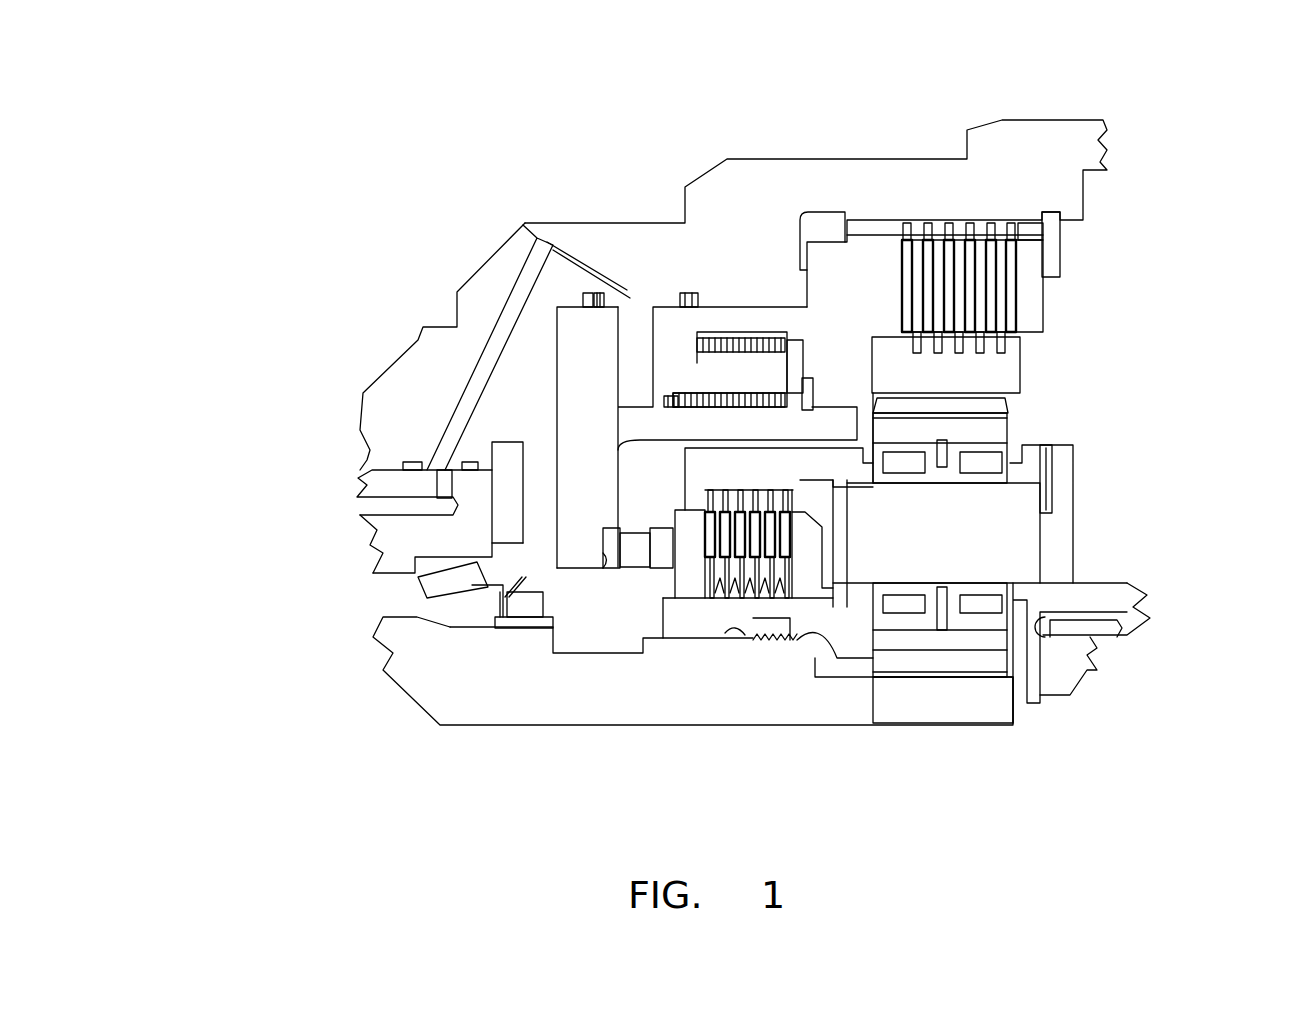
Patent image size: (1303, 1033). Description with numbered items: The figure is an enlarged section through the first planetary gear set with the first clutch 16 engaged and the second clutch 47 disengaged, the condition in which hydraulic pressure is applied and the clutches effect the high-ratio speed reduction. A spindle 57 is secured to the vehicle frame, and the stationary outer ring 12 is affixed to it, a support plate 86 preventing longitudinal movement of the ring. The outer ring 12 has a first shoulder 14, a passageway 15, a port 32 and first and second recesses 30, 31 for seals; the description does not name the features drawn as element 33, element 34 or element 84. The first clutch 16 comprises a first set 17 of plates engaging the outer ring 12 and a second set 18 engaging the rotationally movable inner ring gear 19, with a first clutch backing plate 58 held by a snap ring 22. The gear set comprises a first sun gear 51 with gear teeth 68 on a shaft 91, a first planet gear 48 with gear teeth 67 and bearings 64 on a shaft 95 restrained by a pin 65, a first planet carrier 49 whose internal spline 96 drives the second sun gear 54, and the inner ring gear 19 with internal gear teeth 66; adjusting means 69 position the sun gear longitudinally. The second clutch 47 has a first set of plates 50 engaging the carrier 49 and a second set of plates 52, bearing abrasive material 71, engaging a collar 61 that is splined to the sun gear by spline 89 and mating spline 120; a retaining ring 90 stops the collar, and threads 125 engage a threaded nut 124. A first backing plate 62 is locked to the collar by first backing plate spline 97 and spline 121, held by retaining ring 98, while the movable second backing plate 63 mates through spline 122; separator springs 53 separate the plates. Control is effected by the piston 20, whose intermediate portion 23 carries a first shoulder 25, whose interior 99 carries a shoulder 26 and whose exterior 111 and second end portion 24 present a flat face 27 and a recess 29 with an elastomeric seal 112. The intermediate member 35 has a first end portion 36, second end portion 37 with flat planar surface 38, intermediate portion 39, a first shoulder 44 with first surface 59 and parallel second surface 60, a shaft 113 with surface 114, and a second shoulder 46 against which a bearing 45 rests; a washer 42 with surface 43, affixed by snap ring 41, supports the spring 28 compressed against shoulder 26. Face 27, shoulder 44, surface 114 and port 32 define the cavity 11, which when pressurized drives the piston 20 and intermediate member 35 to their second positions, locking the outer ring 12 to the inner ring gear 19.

The cavity 11 is at (632, 258).
The outer ring 12 is at (775, 187).
The first shoulder 14 is at (798, 160).
The passageway 15 is at (457, 428).
The first clutch 16 is at (1027, 281).
The first set of clutch plates 17 is at (950, 247).
The second set of clutch plates 18 is at (973, 243).
The inner ring gear 19 is at (1000, 370).
The piston 20 is at (899, 235).
The snap ring 22 is at (1065, 257).
The intermediate portion 23 is at (847, 235).
The second end portion 24 is at (670, 320).
The first shoulder 25 is at (803, 212).
The shoulder 26 is at (705, 360).
The face 27 is at (645, 300).
The spring 28 is at (720, 327).
The recess 29 is at (760, 425).
The first recess 30 is at (690, 310).
The second recess 31 is at (549, 244).
The port 32 is at (635, 275).
The passage 33 is at (655, 307).
The flow arrow 34 is at (637, 338).
The intermediate member 35 is at (535, 460).
The first end portion 36 is at (823, 423).
The second end portion 37 is at (558, 462).
The flat planar surface 38 is at (558, 482).
The intermediate portion 39 is at (457, 330).
The snap ring 41 is at (813, 388).
The washer 42 is at (922, 165).
The surface 43 is at (797, 360).
The first shoulder 44 is at (592, 293).
The bearing 45 is at (637, 550).
The second shoulder 46 is at (603, 565).
The second clutch 47 is at (803, 552).
The first planet gear 48 is at (1000, 433).
The first planet carrier 49 is at (756, 483).
The first set of plates 50 is at (708, 508).
The first sun gear 51 is at (958, 716).
The second set of plates 52 is at (778, 567).
The separator springs 53 is at (757, 596).
The second sun gear 54 is at (1072, 683).
The spindle 57 is at (403, 550).
The first clutch backing plate 58 is at (1037, 252).
The first surface 59 is at (593, 430).
The second surface 60 is at (607, 420).
The collar 61 is at (717, 625).
The first backing plate 62 is at (818, 530).
The second backing plate 63 is at (688, 560).
The bearings 64 is at (985, 607).
The pin 65 is at (1043, 477).
The internal gear teeth 66 is at (1013, 403).
The gear teeth 67 is at (925, 662).
The gear teeth 68 is at (1005, 665).
The adjusting means 69 is at (520, 602).
The abrasive material 71 is at (727, 517).
The pin 84 is at (997, 640).
The support plate 86 is at (507, 507).
The spline 89 is at (713, 598).
The retaining ring 90 is at (650, 637).
The shaft 91 is at (437, 673).
The shaft 95 is at (1077, 512).
The internal spline 96 is at (1110, 633).
The first backing plate spline 97 is at (808, 588).
The retaining ring 98 is at (877, 677).
The interior 99 is at (873, 340).
The exterior 111 is at (838, 218).
The elastomeric seal 112 is at (670, 395).
The shaft 113 is at (600, 425).
The surface 114 is at (647, 402).
The mating spline 120 is at (673, 641).
The spline 121 is at (707, 598).
The spline 122 is at (683, 598).
The threaded nut 124 is at (829, 612).
The threads 125 is at (765, 598).